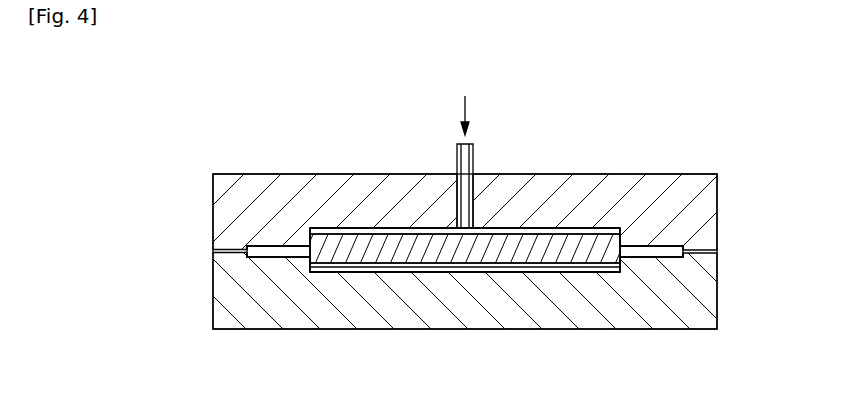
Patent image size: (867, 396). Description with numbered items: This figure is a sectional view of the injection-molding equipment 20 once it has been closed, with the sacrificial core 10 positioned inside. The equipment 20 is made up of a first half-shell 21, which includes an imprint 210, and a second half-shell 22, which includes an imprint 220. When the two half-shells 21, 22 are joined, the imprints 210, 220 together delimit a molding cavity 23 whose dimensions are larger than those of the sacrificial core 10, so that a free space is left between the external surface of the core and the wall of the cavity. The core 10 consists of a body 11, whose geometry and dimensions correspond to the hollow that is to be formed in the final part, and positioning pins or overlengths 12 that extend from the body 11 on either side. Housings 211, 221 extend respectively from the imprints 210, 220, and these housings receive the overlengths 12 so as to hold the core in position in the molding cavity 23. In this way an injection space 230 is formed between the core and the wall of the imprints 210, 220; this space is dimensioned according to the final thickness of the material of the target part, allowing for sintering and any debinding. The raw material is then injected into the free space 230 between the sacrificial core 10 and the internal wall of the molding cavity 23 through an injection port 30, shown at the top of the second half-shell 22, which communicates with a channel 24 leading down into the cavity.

The injection-molding equipment 20 is at (745, 149).
The first half-shell 21 is at (717, 291).
The second half-shell 22 is at (717, 219).
The injection channel 24 is at (475, 150).
The injection port 30 is at (465, 106).
The imprint 220 is at (360, 232).
The injection space 230 is at (568, 228).
The housing 221 is at (255, 250).
The housing 211 is at (262, 255).
The imprint 210 is at (370, 273).
The positioning pins or overlengths 12 is at (288, 250).
The sacrificial core 10 is at (528, 268).
The body 11 is at (565, 252).
The molding cavity 23 is at (600, 267).